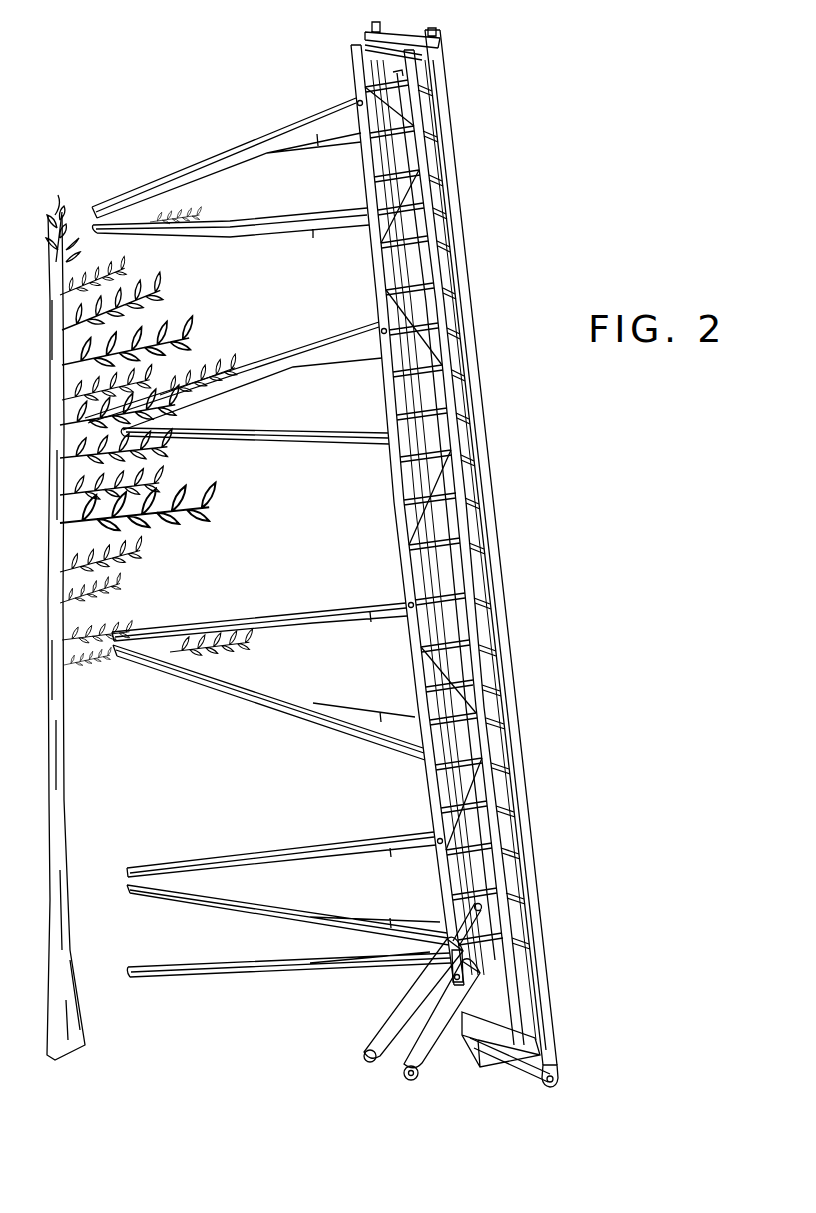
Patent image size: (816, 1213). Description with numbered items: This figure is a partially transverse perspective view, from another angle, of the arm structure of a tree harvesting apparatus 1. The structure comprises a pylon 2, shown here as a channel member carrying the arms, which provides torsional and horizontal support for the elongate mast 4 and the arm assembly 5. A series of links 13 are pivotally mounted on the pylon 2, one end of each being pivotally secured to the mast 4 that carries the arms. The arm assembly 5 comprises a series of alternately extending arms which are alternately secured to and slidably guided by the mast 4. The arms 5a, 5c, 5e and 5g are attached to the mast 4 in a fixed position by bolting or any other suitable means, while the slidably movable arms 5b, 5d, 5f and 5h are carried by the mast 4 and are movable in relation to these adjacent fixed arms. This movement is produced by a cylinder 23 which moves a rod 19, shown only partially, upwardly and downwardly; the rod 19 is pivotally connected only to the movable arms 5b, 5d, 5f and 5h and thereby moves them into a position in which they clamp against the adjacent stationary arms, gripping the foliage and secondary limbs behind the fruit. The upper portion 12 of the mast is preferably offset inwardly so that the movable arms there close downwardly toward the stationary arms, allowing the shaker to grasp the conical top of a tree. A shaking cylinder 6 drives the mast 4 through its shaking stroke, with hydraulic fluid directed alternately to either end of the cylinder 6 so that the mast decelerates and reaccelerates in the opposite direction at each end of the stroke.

The tree trimming apparatus 1 is at (576, 224).
The pylon 2 is at (492, 632).
The elongate mast 4 is at (492, 535).
The arm assembly 5 is at (498, 430).
The arm 5a is at (270, 908).
The slidably movable arm 5b is at (272, 852).
The arm 5c is at (253, 692).
The slidably movable arm 5d is at (261, 619).
The arm 5e is at (265, 434).
The slidably movable arm 5f is at (253, 365).
The arm 5g is at (247, 243).
The slidably movable arm 5h is at (193, 170).
The shaking cylinder 6 is at (402, 1010).
The upper portion of the mast 12 is at (120, 186).
The pivot links 13 is at (383, 333).
The rod 19 is at (512, 695).
The cylinder 23 is at (557, 1058).